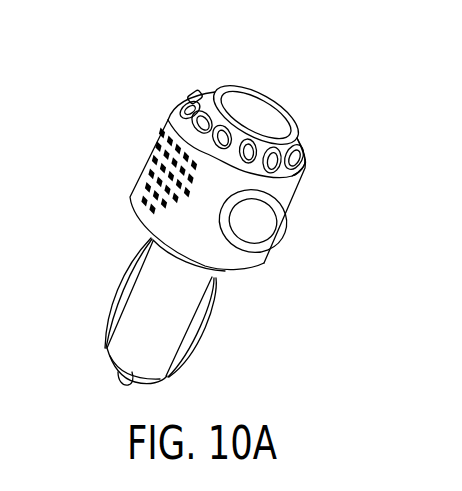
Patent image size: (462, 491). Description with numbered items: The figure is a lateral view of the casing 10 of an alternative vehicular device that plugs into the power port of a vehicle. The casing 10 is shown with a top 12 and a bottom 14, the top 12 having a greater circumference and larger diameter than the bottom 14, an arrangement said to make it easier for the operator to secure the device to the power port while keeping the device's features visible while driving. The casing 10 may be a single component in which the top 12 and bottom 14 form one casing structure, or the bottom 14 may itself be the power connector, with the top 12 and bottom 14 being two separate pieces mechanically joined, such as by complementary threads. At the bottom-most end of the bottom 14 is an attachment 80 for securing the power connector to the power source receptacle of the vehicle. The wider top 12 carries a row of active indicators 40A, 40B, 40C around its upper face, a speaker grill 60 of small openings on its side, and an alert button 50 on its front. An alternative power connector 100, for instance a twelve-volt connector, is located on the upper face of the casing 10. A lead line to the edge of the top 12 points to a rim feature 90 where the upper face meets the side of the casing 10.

The casing 10 is at (238, 226).
The top 12 is at (222, 157).
The bottom 14 is at (164, 323).
The active indicator 40A is at (298, 162).
The active indicator 40B is at (215, 140).
The active indicator 40C is at (182, 107).
The alert button 50 is at (265, 228).
The speaker grill 60 is at (135, 193).
The attachment 80 is at (117, 380).
The rim edge 90 is at (290, 173).
The alternative power connector 100 is at (258, 112).